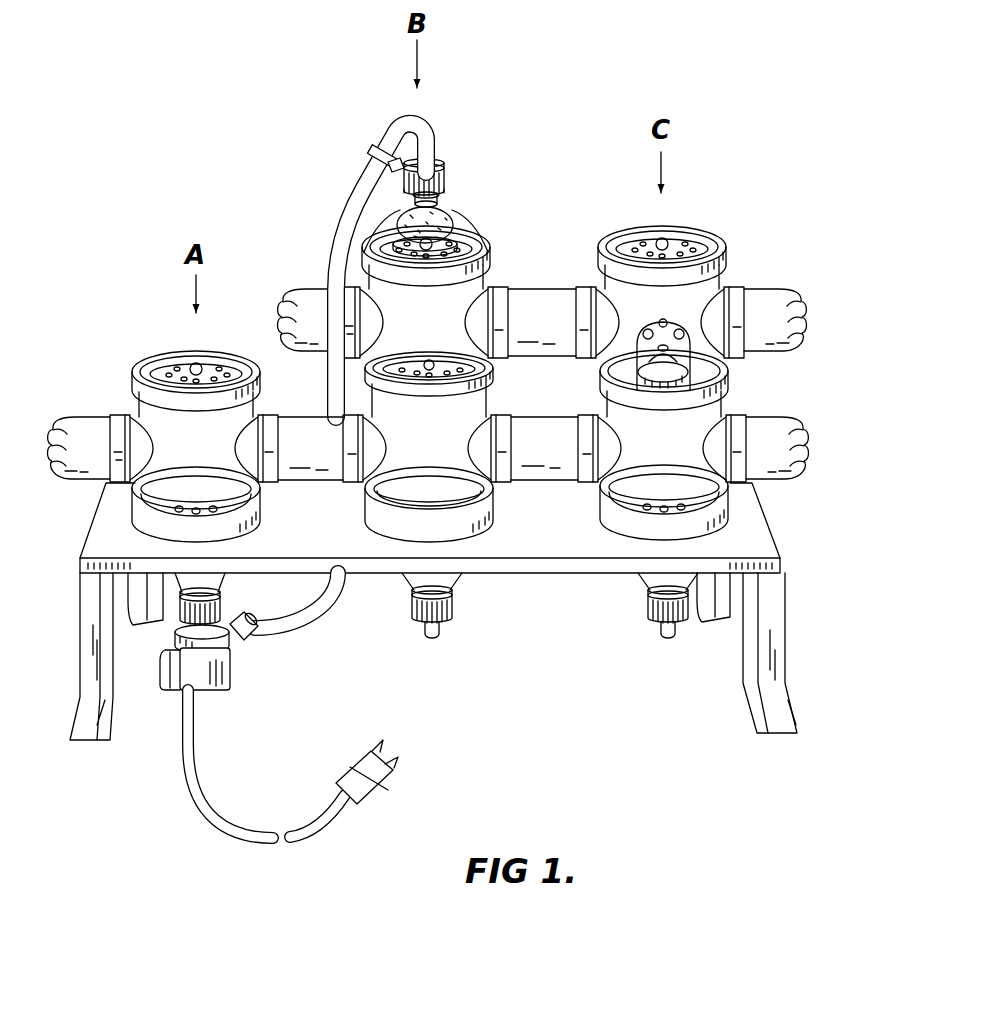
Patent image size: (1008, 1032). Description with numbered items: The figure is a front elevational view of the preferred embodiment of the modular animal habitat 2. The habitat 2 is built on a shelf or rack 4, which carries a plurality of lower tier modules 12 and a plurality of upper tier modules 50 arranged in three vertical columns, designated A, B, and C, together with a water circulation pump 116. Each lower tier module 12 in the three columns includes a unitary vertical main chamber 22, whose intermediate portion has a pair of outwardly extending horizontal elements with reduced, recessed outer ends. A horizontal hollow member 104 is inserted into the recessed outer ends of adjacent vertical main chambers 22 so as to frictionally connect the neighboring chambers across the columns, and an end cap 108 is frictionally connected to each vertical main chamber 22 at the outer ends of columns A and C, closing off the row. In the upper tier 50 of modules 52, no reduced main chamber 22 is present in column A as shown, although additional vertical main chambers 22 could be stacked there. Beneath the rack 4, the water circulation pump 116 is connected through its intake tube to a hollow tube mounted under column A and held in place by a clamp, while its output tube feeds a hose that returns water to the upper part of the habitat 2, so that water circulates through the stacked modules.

The modular animal habitat 2 is at (602, 714).
The shelf or rack 4 is at (553, 577).
The lower tier module 12 is at (835, 440).
The vertical main chamber 22 is at (593, 406).
The upper tier module 50 is at (835, 322).
The module 52 is at (594, 278).
The horizontal hollow member 104 is at (318, 483).
The end cap 108 is at (80, 418).
The water circulation pump 116 is at (232, 673).